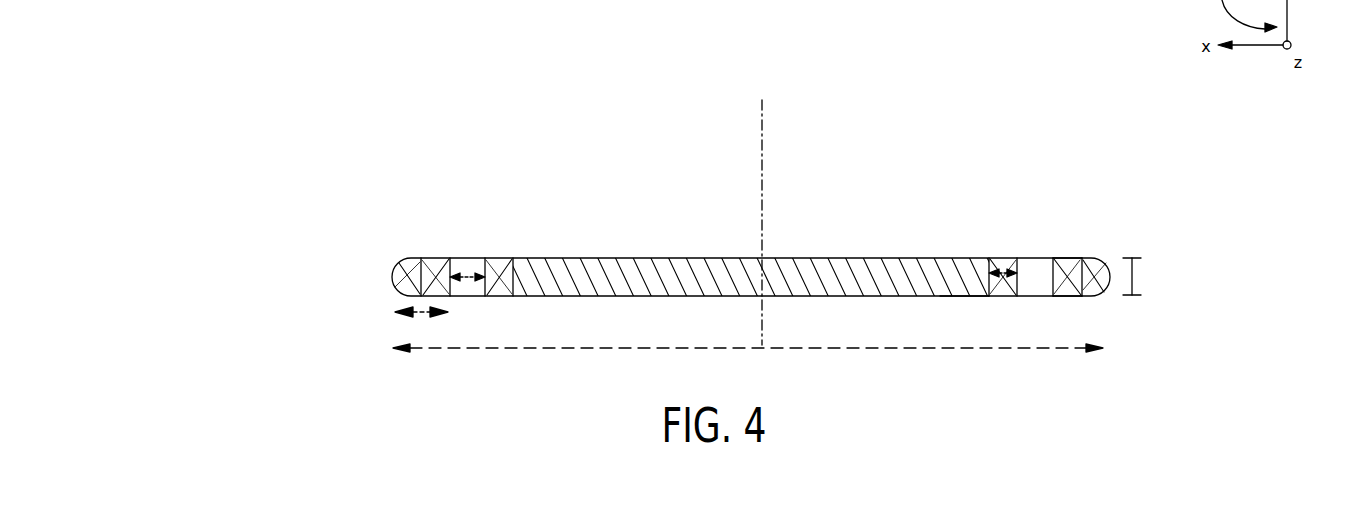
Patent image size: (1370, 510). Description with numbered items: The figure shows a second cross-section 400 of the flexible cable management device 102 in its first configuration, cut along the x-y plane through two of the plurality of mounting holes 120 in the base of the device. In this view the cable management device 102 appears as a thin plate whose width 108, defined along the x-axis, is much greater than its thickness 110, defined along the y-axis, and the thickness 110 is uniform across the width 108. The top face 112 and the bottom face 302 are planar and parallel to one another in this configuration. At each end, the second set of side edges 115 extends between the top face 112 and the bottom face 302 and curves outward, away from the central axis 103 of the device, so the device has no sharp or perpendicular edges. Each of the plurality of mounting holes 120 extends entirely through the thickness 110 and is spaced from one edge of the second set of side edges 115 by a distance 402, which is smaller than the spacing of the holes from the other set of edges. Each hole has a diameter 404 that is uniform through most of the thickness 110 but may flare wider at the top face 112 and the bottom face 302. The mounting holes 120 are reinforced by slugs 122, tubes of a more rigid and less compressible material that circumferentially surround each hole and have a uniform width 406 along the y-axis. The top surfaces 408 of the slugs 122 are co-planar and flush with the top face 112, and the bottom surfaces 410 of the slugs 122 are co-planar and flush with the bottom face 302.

The second cross-section 400 is at (290, 127).
The cable management device 102 is at (425, 197).
The central axis 103 is at (763, 123).
The width 108 is at (563, 348).
The thickness 110 is at (1134, 276).
The top face 112 is at (667, 257).
The second set of side edges 115 is at (393, 272).
The plurality of mounting holes 120 is at (468, 266).
The slugs 122 is at (437, 258).
The bottom face 302 is at (962, 297).
The distance 402 is at (420, 313).
The diameter 404 is at (468, 278).
The uniform width 406 is at (1000, 262).
The top surfaces 408 is at (1063, 258).
The bottom surfaces 410 is at (1067, 297).